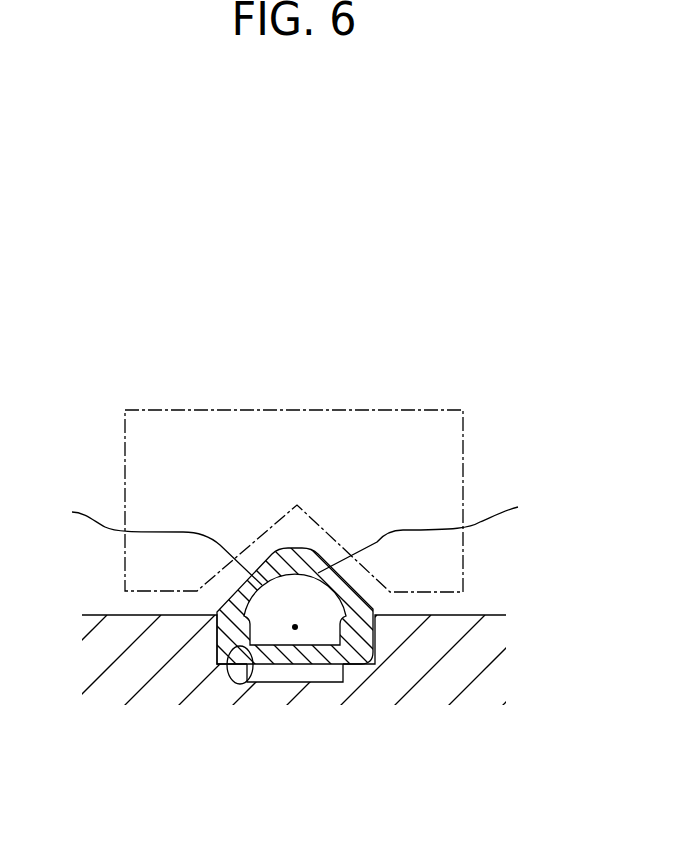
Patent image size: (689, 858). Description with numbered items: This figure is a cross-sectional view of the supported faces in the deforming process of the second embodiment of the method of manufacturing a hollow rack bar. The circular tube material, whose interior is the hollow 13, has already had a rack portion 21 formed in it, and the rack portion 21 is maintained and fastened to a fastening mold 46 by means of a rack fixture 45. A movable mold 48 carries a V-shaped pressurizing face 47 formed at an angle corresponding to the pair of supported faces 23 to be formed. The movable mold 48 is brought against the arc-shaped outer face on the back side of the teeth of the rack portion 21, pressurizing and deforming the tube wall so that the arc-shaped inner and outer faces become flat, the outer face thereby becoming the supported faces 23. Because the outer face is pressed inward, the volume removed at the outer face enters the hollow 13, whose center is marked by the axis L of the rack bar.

The hollow 13 is at (282, 613).
The rack portion 21 is at (337, 684).
The supported faces 23 is at (296, 538).
The rack fixture 45 is at (227, 668).
The fastening mold 46 is at (482, 614).
The V-shaped pressurizing face 47 is at (312, 510).
The movable mold 48 is at (187, 410).
The axis L is at (295, 627).